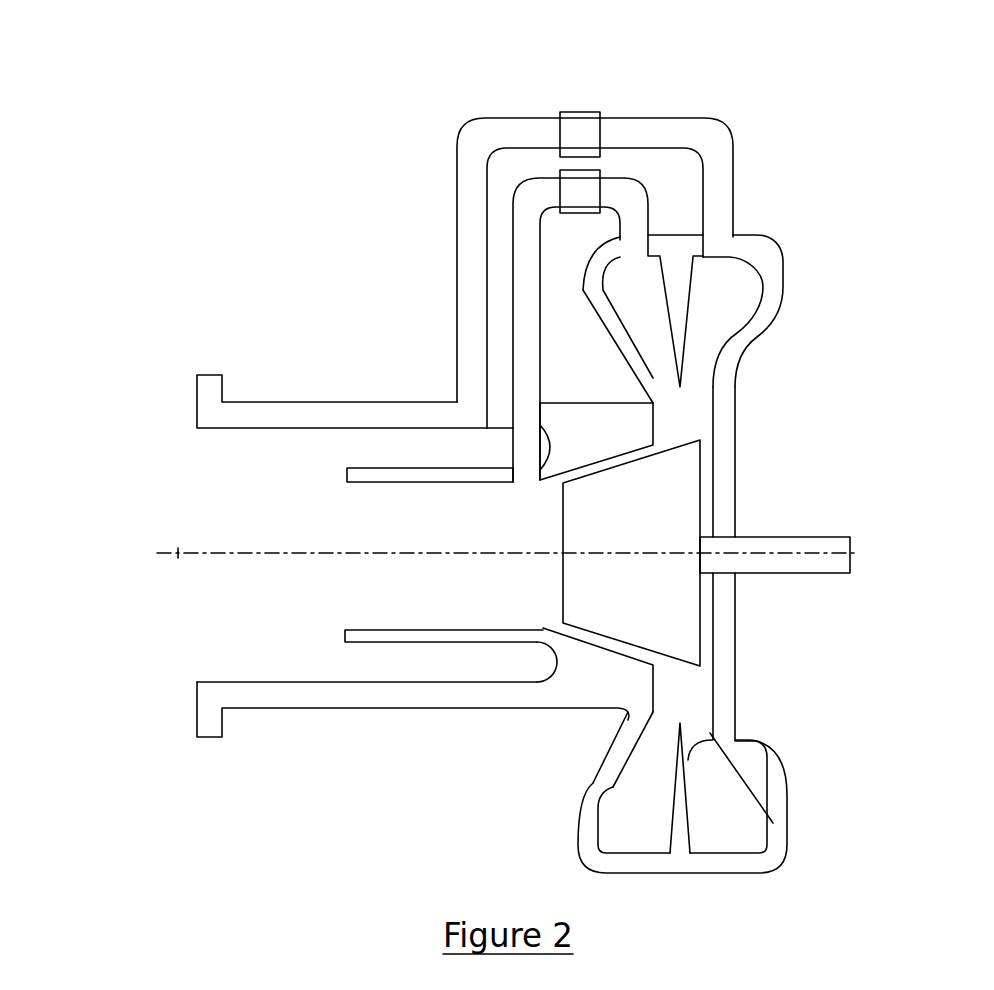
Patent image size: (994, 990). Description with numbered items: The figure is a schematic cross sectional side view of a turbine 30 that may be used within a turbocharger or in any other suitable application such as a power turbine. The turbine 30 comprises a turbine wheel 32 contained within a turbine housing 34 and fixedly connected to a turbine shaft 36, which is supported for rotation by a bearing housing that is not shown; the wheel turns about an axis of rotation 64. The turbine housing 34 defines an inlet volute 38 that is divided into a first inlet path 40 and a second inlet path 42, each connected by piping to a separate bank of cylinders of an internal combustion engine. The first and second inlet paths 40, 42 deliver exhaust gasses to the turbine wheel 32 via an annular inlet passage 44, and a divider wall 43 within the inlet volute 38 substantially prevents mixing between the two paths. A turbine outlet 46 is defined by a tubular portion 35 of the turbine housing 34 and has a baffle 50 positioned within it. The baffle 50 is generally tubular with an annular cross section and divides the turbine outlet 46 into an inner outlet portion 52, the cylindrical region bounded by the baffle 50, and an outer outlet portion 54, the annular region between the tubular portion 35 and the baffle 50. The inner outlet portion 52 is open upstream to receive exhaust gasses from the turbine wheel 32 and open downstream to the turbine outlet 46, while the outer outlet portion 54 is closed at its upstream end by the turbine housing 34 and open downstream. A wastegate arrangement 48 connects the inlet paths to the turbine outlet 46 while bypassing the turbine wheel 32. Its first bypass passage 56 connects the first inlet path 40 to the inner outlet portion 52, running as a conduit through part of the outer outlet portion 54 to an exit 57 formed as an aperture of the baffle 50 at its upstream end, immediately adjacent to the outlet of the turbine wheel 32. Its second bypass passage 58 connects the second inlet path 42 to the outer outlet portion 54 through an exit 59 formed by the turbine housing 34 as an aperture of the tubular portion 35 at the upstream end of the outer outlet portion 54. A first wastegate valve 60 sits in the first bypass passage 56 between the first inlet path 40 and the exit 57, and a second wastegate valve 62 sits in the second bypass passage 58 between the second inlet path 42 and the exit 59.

The turbine 30 is at (250, 217).
The turbine wheel 32 is at (673, 478).
The turbine housing 34 is at (683, 857).
The tubular portion 35 is at (285, 692).
The turbine shaft 36 is at (797, 537).
The inlet volute 38 is at (763, 221).
The first inlet path 40 is at (635, 290).
The second inlet path 42 is at (727, 287).
The divider wall 43 is at (690, 317).
The annular inlet passage 44 is at (690, 397).
The turbine outlet 46 is at (235, 528).
The wastegate arrangement 48 is at (447, 88).
The baffle 50 is at (380, 635).
The inner outlet portion 52 is at (395, 495).
The outer outlet portion 54 is at (472, 665).
The first bypass passage 56 is at (527, 257).
The exit 57 is at (530, 480).
The second bypass passage 58 is at (473, 183).
The exit 59 is at (470, 415).
The first wastegate valve 60 is at (587, 197).
The second wastegate valve 62 is at (578, 130).
The axis of rotation 64 is at (178, 555).